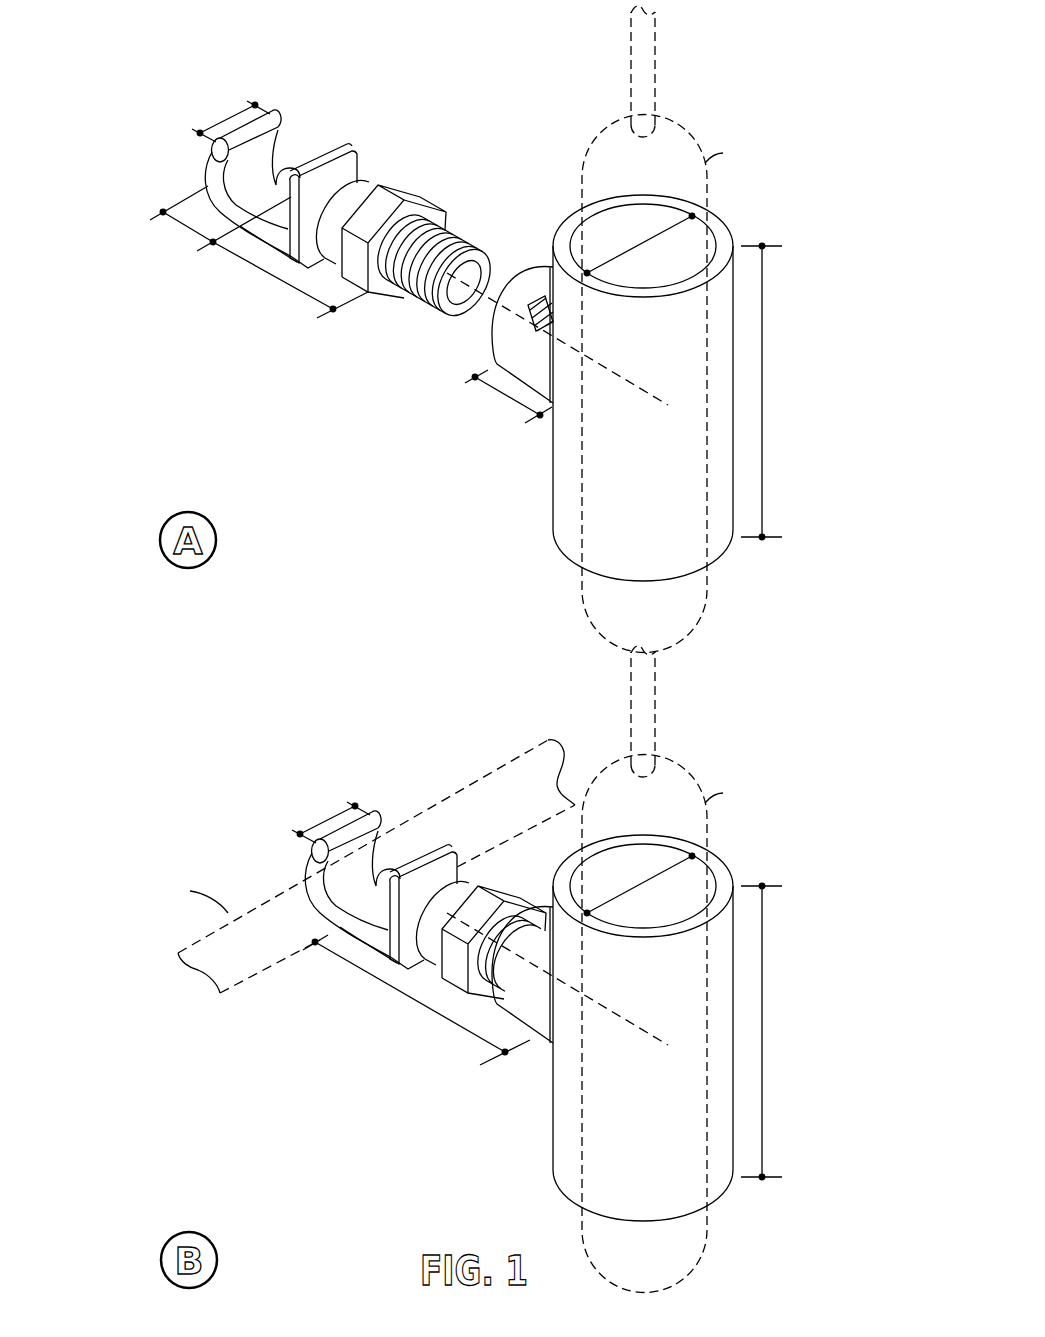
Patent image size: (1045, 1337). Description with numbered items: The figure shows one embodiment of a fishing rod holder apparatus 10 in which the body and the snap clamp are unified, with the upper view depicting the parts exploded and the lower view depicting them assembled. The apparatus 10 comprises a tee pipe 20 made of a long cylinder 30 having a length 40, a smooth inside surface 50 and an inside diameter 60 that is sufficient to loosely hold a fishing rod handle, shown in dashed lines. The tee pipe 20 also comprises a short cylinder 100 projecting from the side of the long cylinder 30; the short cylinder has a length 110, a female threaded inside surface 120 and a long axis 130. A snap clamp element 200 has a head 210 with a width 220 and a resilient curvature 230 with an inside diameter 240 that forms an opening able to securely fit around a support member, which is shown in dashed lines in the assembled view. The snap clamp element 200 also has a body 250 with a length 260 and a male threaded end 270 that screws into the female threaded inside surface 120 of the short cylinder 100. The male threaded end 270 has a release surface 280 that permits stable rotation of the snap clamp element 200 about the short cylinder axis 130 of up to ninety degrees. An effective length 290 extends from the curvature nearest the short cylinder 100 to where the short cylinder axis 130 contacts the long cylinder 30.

The fishing rod holder apparatus 10 is at (462, 649).
The tee pipe 20 is at (616, 649).
The long cylinder 30 is at (715, 537).
The length 40 is at (763, 377).
The inside surface 50 is at (573, 247).
The inside diameter 60 is at (647, 241).
The short cylinder 100 is at (486, 655).
The boss depth 110 is at (505, 400).
The female threaded inside surface 120 is at (542, 299).
The long axis 130 is at (614, 373).
The snap clamp element 200 is at (343, 563).
The head 210 is at (337, 147).
The width 220 is at (235, 118).
The resilient curvature 230 is at (256, 527).
The inside diameter 240 is at (188, 228).
The body 250 is at (330, 192).
The length 260 is at (282, 278).
The male threaded end 270 is at (446, 240).
The release surface 280 is at (420, 292).
The effective length 290 is at (405, 993).